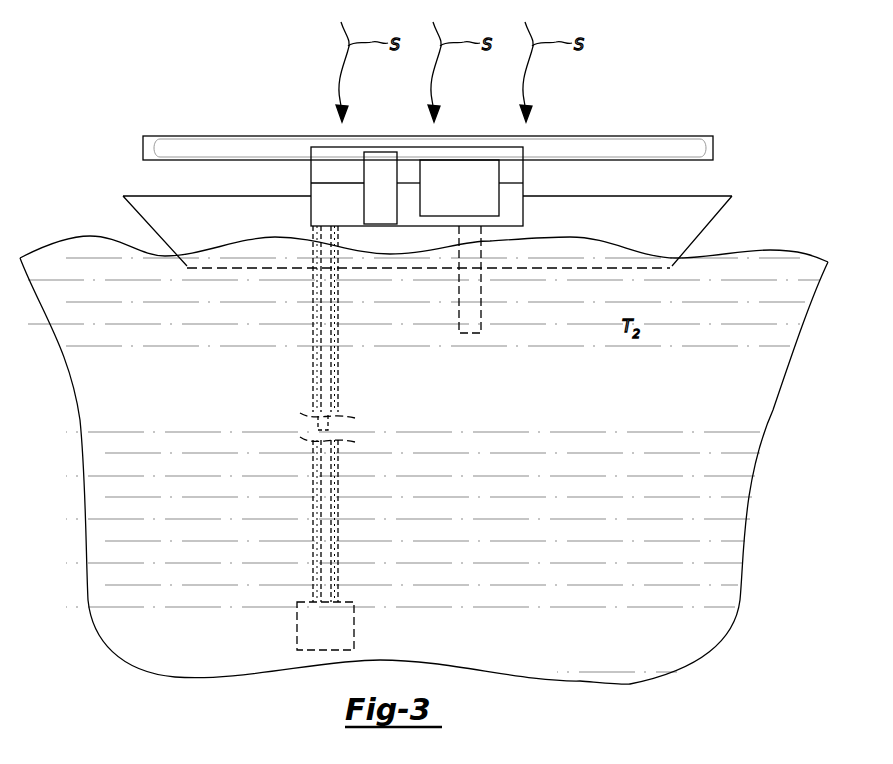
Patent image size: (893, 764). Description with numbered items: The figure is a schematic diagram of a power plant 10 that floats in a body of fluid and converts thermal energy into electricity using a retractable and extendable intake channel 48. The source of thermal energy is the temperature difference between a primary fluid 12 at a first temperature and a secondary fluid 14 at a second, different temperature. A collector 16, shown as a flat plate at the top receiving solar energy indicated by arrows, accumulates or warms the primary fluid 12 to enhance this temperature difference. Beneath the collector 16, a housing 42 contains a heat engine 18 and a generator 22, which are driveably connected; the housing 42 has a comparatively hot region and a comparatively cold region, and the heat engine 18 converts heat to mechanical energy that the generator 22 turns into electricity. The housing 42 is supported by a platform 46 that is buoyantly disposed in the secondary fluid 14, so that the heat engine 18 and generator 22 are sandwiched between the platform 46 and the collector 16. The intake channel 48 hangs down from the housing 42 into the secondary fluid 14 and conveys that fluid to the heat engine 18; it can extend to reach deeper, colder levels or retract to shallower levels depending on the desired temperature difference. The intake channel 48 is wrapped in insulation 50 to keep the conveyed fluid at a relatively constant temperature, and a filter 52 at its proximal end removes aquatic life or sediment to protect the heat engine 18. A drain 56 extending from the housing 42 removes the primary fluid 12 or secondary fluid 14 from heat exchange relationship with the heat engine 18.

The power plant 10 is at (680, 72).
The primary fluid 12 is at (604, 148).
The secondary fluid 14 is at (742, 443).
The collector 16 is at (713, 148).
The heat engine 18 is at (391, 196).
The generator 22 is at (469, 198).
The housing 42 is at (455, 186).
The platform 46 is at (712, 222).
The intake channel 48 is at (315, 425).
The insulation 50 is at (338, 335).
The filter 52 is at (297, 646).
The drain 56 is at (481, 325).